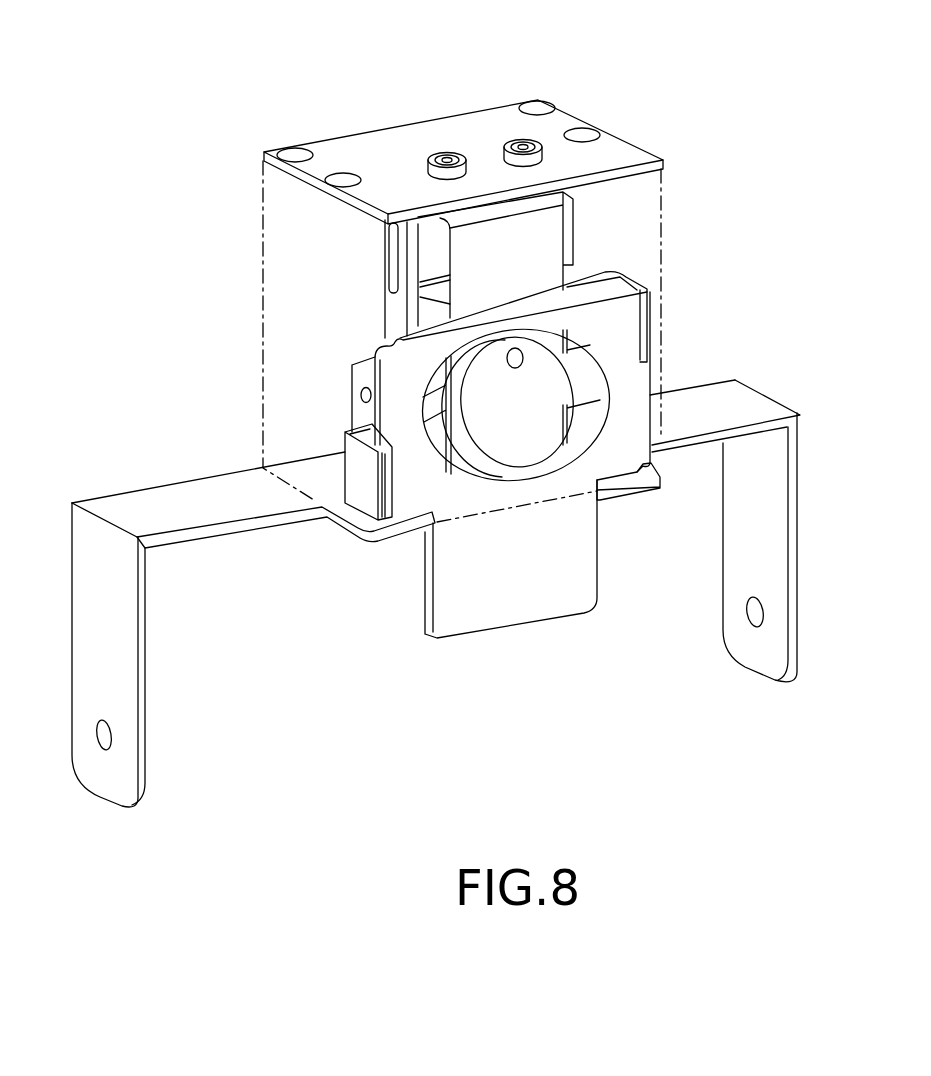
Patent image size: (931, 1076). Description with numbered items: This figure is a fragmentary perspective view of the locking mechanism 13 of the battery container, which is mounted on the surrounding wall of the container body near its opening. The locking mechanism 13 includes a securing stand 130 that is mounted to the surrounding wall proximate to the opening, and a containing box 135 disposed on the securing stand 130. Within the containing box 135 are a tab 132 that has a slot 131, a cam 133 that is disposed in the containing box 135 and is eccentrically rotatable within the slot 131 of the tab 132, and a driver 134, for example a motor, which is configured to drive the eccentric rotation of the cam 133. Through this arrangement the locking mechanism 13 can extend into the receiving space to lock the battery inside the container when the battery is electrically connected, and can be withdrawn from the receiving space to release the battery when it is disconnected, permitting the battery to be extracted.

The locking mechanism 13 is at (360, 111).
The securing stand 130 is at (165, 494).
The slot 131 is at (605, 376).
The tab 132 is at (532, 603).
The cam 133 is at (545, 417).
The driver 134 is at (428, 320).
The containing box 135 is at (661, 280).